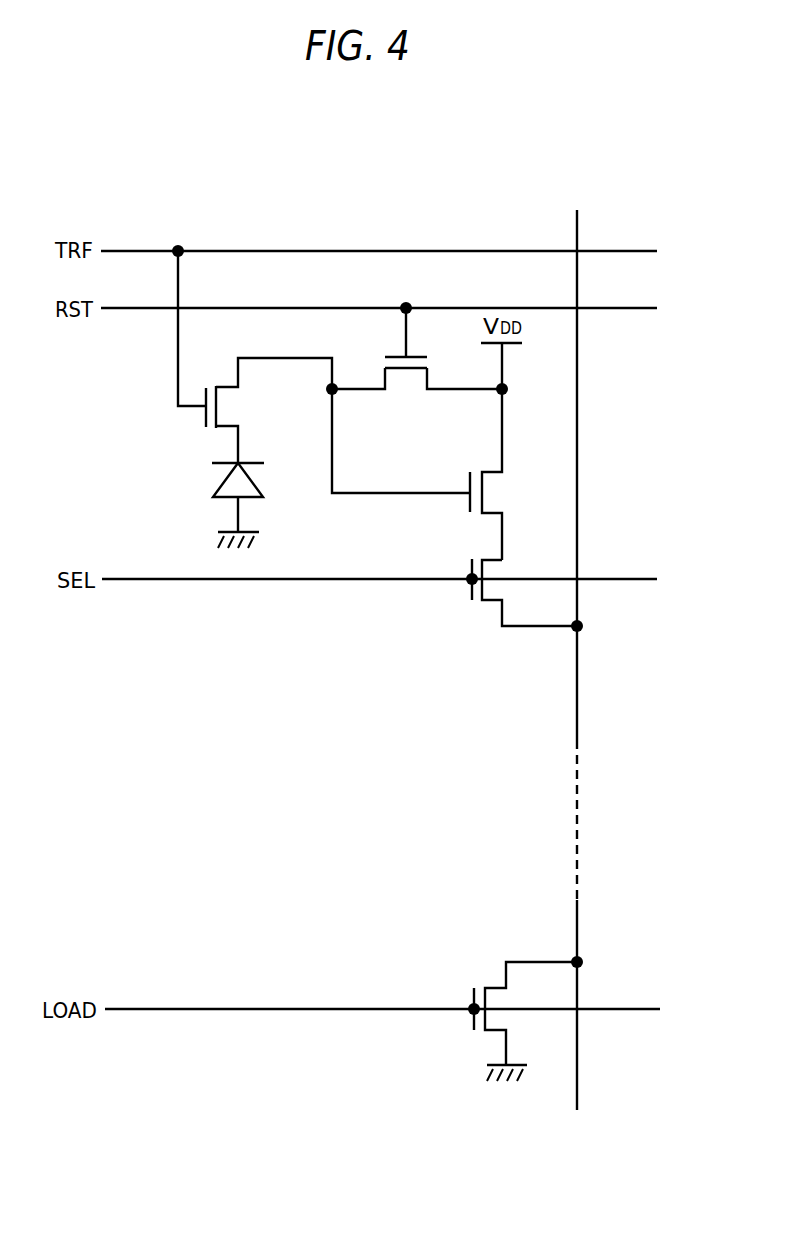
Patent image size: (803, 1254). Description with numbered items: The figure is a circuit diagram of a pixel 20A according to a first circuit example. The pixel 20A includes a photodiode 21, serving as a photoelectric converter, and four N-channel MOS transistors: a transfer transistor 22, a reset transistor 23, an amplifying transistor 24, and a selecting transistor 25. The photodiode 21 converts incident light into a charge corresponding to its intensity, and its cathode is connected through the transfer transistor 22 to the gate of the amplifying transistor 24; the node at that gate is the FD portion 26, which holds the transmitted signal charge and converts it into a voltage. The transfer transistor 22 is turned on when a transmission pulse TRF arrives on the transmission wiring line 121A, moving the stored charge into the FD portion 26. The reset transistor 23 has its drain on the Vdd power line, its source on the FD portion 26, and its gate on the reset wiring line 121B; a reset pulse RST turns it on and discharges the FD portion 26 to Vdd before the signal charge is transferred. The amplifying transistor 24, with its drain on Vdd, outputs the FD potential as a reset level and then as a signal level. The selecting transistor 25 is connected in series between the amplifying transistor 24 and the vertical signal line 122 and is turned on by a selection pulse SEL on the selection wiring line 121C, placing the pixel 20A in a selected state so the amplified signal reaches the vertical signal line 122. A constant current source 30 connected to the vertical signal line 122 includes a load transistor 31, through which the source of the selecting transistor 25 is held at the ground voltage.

The pixel 20A is at (490, 208).
The transmission wiring line 121A is at (274, 250).
The reset wiring line 121B is at (274, 307).
The selection wiring line 121C is at (270, 581).
The photodiode 21 is at (256, 484).
The transfer transistor 22 is at (228, 404).
The reset transistor 23 is at (403, 377).
The amplifying transistor 24 is at (492, 491).
The selecting transistor 25 is at (497, 574).
The FD portion 26 is at (336, 393).
The vertical signal line 122 is at (580, 662).
The constant current source 30 is at (626, 948).
The load transistor 31 is at (500, 1001).